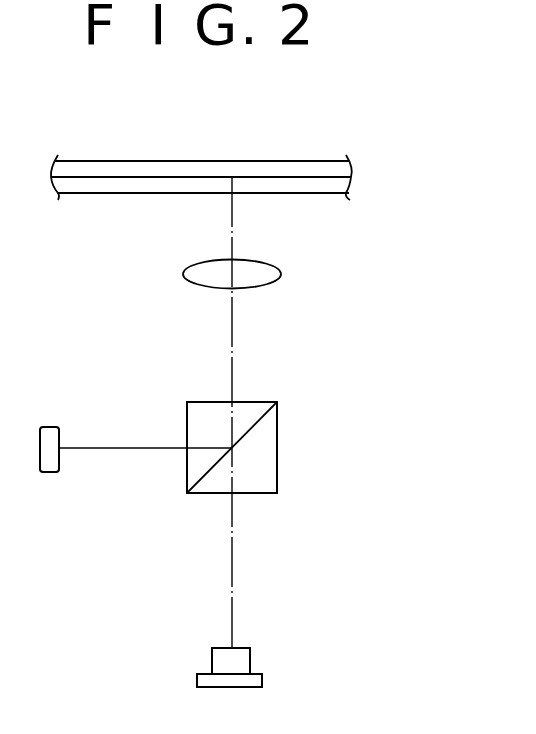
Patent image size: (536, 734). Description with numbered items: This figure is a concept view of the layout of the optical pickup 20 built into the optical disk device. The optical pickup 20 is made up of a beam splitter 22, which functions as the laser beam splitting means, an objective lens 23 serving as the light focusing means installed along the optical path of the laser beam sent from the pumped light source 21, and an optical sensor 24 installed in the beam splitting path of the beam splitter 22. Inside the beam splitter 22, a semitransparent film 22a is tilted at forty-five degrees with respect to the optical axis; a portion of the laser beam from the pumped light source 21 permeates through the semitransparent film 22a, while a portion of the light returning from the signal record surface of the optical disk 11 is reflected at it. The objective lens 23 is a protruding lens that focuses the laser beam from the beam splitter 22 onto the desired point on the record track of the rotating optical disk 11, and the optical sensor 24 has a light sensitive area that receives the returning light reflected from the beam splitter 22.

The optical disk 11 is at (292, 160).
The optical pickup 20 is at (400, 250).
The pumped light source 21 is at (250, 658).
The beam splitter 22 is at (260, 467).
The semitransparent film 22a is at (258, 421).
The objective lens 23 is at (281, 271).
The optical sensor 24 is at (46, 473).